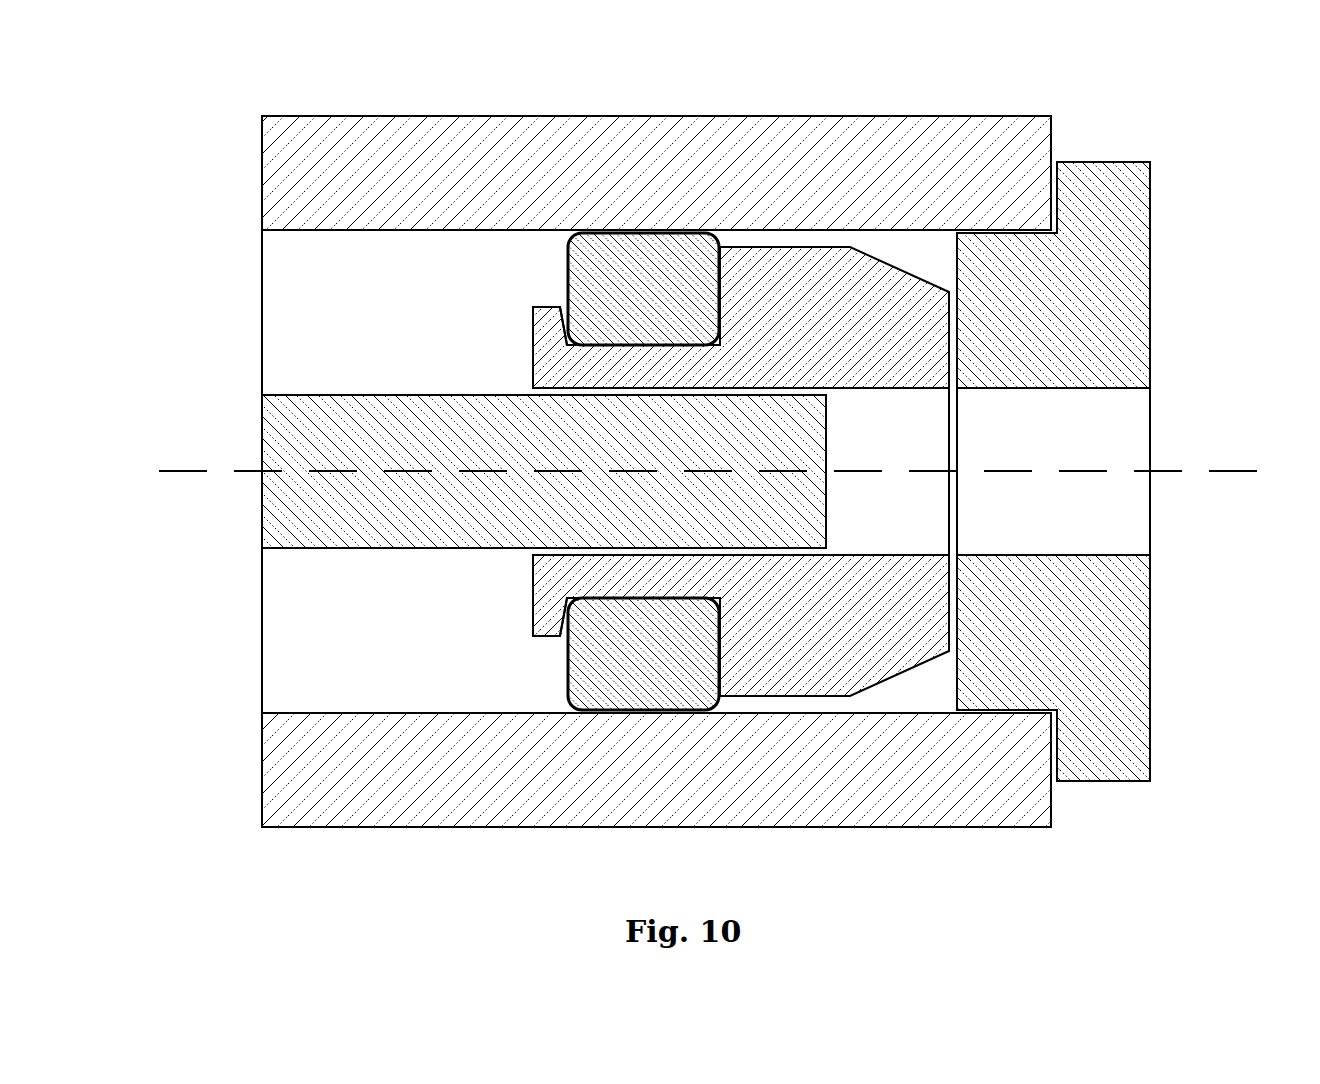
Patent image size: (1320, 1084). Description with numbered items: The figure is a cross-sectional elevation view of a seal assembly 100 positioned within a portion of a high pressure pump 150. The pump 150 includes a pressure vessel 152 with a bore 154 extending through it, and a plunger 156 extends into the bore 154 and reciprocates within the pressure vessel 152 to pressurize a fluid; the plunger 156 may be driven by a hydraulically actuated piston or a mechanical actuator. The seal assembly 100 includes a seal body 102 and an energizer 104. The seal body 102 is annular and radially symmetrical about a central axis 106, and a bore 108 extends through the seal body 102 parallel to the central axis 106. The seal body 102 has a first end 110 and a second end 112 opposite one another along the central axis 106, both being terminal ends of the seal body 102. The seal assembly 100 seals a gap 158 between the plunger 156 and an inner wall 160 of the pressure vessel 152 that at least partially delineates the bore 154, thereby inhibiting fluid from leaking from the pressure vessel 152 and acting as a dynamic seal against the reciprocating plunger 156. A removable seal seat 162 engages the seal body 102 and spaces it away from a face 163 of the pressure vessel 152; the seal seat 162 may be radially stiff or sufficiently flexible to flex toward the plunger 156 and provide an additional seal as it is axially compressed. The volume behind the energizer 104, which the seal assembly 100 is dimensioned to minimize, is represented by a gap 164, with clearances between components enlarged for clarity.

The seal assembly 100 is at (693, 386).
The seal body 102 is at (1029, 421).
The energizer 104 is at (662, 386).
The central axis 106 is at (687, 444).
The bore 108 is at (932, 634).
The first end 110 is at (1127, 293).
The second end 112 is at (502, 471).
The high pressure pump 150 is at (703, 464).
The pressure vessel 152 is at (656, 444).
The bore 154 is at (350, 312).
The plunger 156 is at (510, 446).
The gap 158 is at (656, 155).
The inner wall 160 is at (297, 250).
The removable seal seat 162 is at (1198, 471).
The face 163 is at (1104, 462).
The gap 164 is at (741, 384).